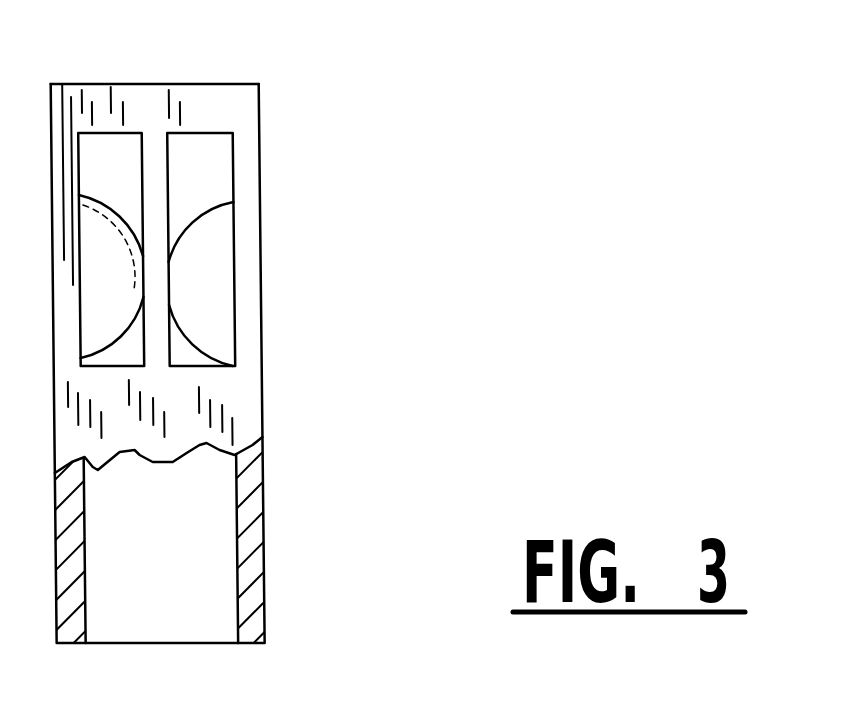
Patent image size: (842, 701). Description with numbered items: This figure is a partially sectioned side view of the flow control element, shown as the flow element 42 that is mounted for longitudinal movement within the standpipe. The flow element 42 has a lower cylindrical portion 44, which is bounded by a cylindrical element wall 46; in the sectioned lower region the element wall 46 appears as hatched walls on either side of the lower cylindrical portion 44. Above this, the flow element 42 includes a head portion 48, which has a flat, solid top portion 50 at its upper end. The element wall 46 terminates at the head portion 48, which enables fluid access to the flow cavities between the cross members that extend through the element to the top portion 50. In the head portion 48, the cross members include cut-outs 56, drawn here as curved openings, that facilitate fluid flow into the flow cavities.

The flow element 42 is at (421, 350).
The lower cylindrical portion 44 is at (280, 543).
The cylindrical element wall 46 is at (248, 615).
The head portion 48 is at (276, 217).
The top portion 50 is at (228, 84).
The cut-outs 56 is at (208, 323).